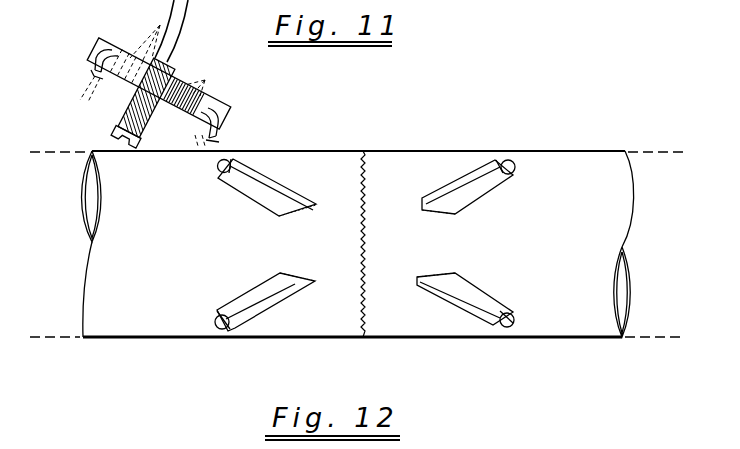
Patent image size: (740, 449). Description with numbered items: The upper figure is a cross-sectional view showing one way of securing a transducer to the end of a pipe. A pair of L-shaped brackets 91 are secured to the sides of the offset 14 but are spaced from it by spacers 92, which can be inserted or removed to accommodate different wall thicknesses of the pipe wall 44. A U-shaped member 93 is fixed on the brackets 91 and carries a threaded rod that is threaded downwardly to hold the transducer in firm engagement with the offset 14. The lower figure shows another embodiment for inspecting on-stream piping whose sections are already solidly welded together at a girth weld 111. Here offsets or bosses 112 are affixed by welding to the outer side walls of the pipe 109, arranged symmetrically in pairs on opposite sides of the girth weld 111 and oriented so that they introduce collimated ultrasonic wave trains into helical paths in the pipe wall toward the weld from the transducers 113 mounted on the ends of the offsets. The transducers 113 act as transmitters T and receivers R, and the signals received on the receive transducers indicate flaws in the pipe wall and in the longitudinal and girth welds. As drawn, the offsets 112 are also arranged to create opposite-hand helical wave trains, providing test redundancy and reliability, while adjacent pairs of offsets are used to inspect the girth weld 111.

In FIG. 11, the pipe wall 44 is at (190, 1).
In FIG. 11, the L-shaped brackets 91 is at (96, 48).
In FIG. 11, the spacers 92 is at (160, 25).
In FIG. 11, the U-shaped member 93 is at (96, 64).
In FIG. 11, the offset 14 is at (170, 63).
In FIG. 12, the pipe 109 is at (580, 160).
In FIG. 12, the girth weld 111 is at (365, 218).
In FIG. 12, the offsets or bosses 112 is at (273, 198).
In FIG. 12, the transducers 113 is at (513, 162).
In FIG. 12, the receiver R is at (218, 167).
In FIG. 12, the transmitter T is at (220, 330).